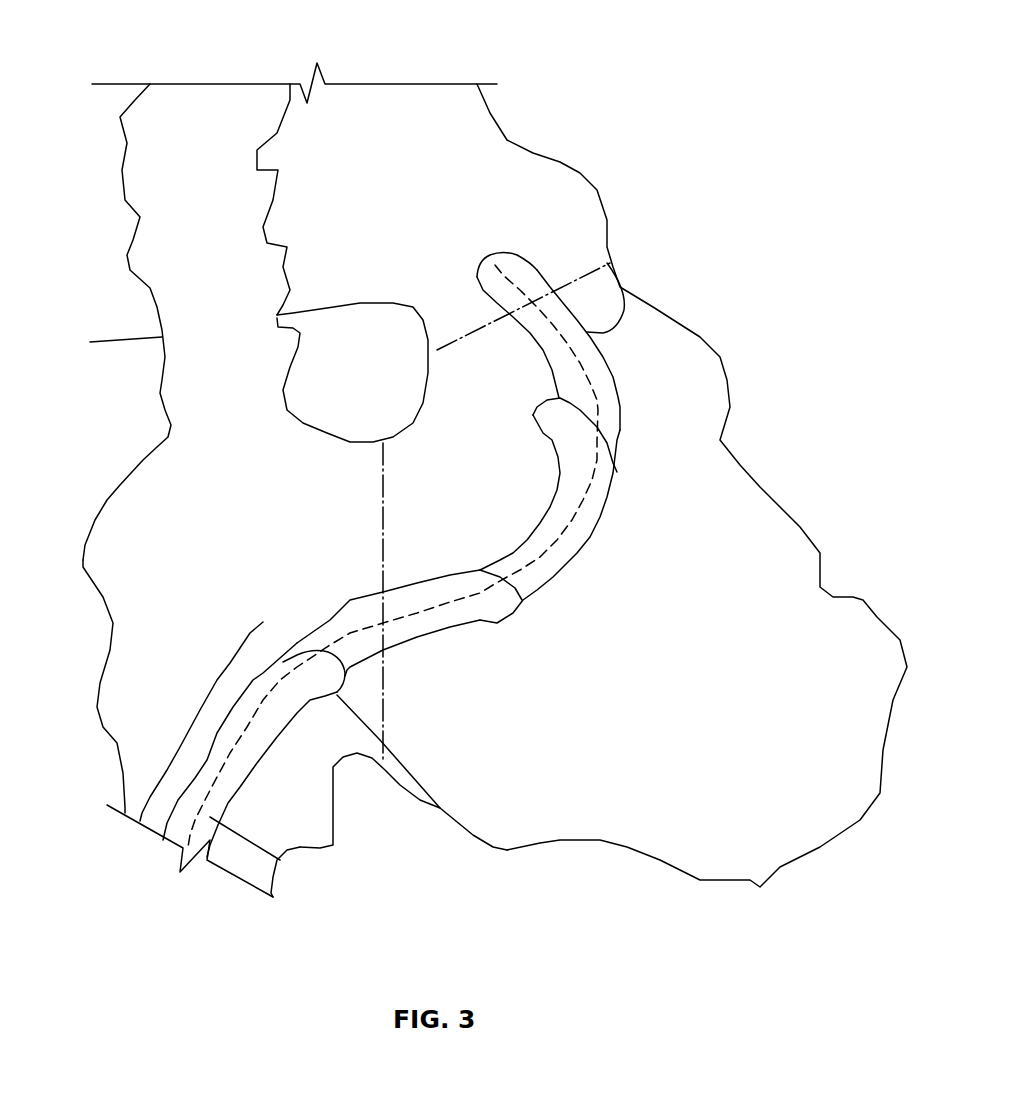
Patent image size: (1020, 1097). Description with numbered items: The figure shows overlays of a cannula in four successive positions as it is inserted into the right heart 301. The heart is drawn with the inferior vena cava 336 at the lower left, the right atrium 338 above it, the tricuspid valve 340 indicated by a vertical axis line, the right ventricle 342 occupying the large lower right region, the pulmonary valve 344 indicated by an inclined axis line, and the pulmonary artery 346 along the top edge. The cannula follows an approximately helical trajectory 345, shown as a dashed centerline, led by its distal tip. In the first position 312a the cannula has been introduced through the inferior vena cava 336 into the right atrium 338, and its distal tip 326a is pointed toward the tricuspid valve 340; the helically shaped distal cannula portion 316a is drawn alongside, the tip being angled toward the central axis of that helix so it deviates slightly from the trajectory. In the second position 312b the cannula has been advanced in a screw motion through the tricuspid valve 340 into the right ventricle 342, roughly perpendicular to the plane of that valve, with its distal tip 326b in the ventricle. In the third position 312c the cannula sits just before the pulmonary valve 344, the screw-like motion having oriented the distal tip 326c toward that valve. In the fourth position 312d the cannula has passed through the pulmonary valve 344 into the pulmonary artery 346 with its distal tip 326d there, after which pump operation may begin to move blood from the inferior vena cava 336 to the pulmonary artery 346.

The heart 301 is at (132, 62).
The pulmonary artery 346 is at (400, 118).
The right atrium 338 is at (117, 507).
The inferior vena cava 336 is at (103, 733).
The right ventricle 342 is at (863, 603).
The tricuspid valve 340 is at (383, 517).
The pulmonary valve 344 is at (462, 340).
The helical trajectory 345 is at (527, 265).
The distal cannula portion 316a is at (198, 708).
The cannula in first position 312a is at (280, 860).
The cannula in second position 312b is at (403, 630).
The cannula in third position 312c is at (567, 547).
The cannula in fourth position 312d is at (643, 300).
The distal tip 326a is at (307, 688).
The distal tip 326b is at (487, 617).
The distal tip 326c is at (583, 457).
The distal tip 326d is at (510, 257).